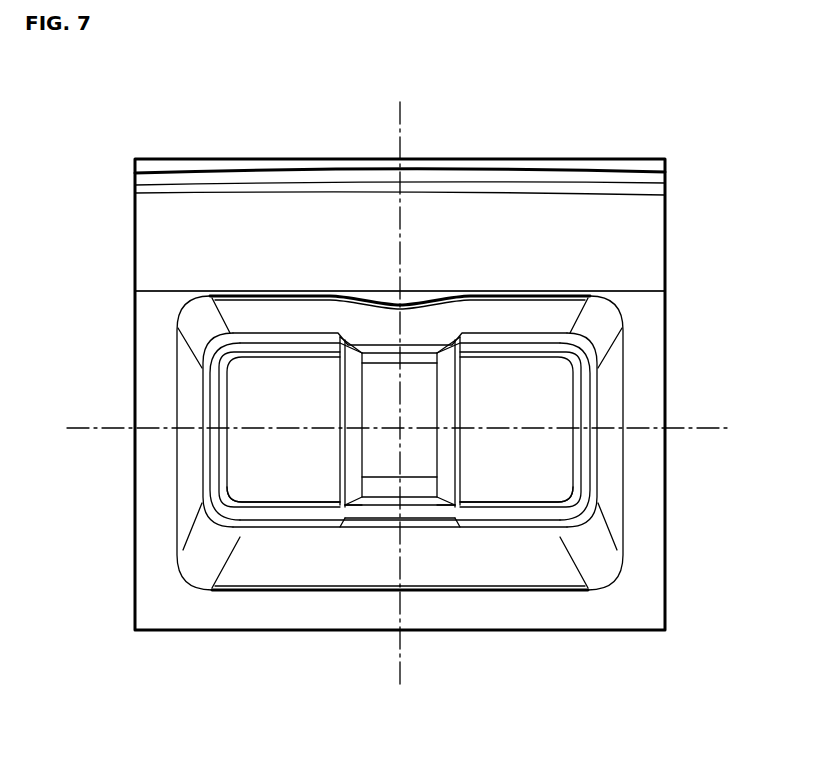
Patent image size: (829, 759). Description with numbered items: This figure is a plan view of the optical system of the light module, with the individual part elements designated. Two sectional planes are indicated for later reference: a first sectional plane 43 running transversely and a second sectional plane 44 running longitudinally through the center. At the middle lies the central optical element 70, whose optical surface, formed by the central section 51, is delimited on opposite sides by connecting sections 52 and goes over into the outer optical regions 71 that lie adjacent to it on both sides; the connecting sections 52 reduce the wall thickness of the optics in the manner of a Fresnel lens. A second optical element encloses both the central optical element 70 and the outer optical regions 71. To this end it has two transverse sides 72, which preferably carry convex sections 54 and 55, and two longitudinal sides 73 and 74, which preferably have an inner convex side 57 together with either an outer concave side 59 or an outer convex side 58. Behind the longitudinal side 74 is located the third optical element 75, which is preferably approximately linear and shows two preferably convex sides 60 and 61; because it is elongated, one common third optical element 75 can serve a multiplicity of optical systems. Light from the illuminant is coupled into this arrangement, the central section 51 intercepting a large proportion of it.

The first sectional plane 43 is at (724, 432).
The second sectional plane 44 is at (400, 686).
The central section 51 is at (422, 382).
The connecting sections 52 is at (348, 458).
The convex section 54 is at (222, 390).
The convex section 55 is at (187, 383).
The inner convex side 57 is at (320, 348).
The outer convex side 58 is at (507, 315).
The outer concave side 59 is at (522, 570).
The convex side 60 is at (638, 257).
The convex side 61 is at (655, 172).
The central optical element 70 is at (405, 445).
The outer optical regions 71 is at (267, 480).
The transverse sides 72 is at (195, 470).
The longitudinal side 73 is at (295, 548).
The longitudinal side 74 is at (337, 320).
The third optical element 75 is at (477, 227).